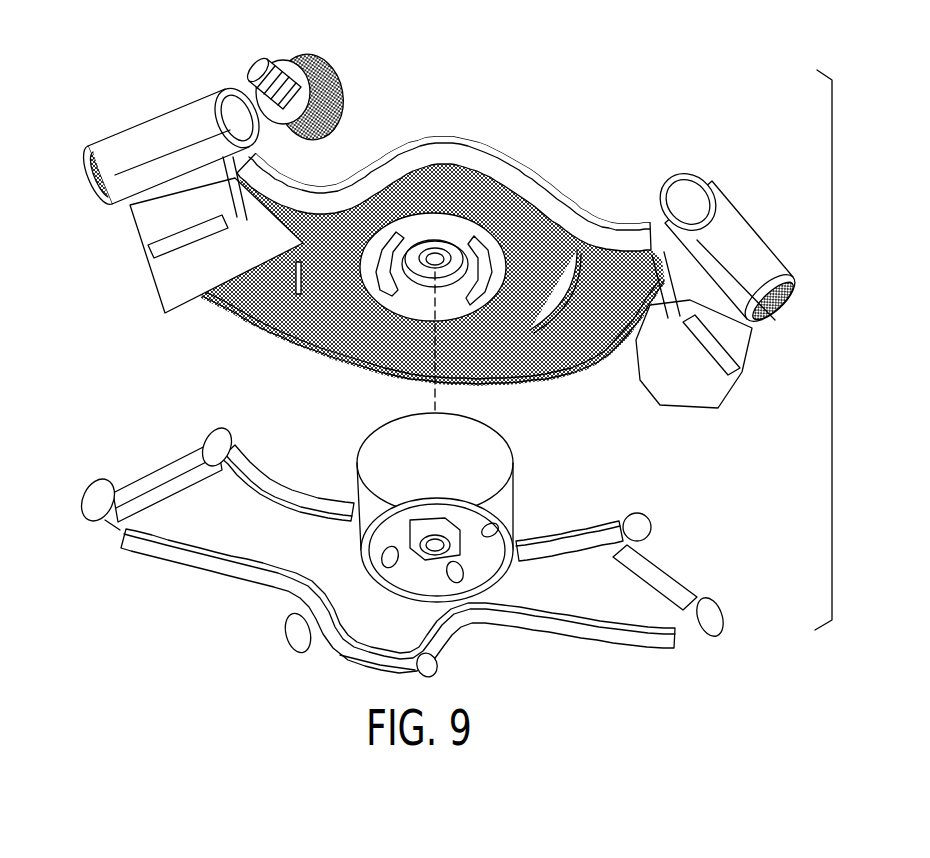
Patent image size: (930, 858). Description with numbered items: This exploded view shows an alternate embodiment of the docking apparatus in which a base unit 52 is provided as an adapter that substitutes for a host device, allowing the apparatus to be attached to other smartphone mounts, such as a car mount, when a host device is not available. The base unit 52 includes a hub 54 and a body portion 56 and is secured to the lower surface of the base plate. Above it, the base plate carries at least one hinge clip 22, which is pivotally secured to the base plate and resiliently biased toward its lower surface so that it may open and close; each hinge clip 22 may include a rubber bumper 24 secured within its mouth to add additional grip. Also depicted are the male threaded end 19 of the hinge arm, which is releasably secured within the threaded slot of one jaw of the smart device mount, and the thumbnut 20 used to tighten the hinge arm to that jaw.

The male threaded end 19 is at (258, 66).
The thumbnut 20 is at (340, 80).
The hinge clip 22 is at (150, 130).
The rubber bumper 24 is at (557, 363).
The base unit 52 is at (258, 603).
The hub 54 is at (388, 445).
The body portion 56 is at (453, 627).